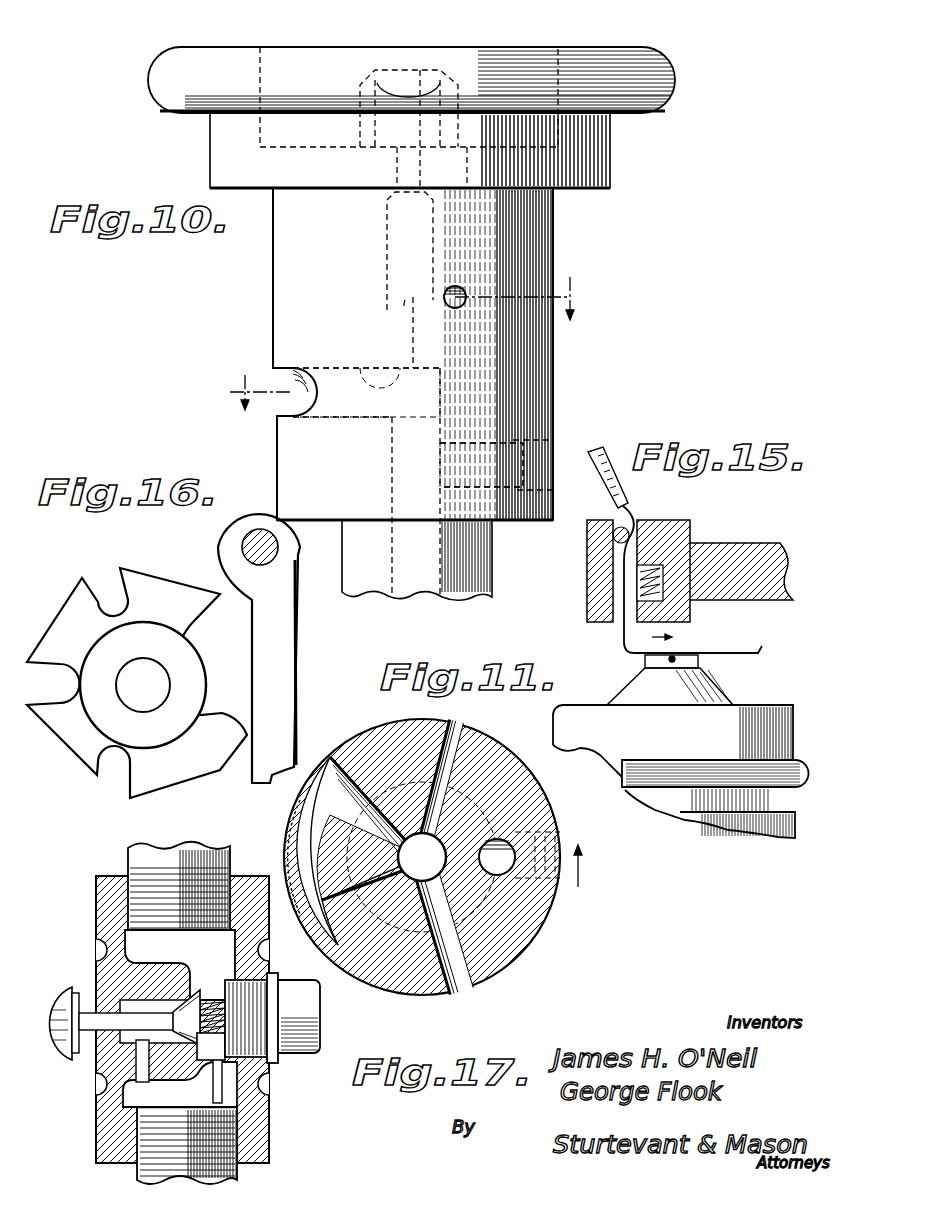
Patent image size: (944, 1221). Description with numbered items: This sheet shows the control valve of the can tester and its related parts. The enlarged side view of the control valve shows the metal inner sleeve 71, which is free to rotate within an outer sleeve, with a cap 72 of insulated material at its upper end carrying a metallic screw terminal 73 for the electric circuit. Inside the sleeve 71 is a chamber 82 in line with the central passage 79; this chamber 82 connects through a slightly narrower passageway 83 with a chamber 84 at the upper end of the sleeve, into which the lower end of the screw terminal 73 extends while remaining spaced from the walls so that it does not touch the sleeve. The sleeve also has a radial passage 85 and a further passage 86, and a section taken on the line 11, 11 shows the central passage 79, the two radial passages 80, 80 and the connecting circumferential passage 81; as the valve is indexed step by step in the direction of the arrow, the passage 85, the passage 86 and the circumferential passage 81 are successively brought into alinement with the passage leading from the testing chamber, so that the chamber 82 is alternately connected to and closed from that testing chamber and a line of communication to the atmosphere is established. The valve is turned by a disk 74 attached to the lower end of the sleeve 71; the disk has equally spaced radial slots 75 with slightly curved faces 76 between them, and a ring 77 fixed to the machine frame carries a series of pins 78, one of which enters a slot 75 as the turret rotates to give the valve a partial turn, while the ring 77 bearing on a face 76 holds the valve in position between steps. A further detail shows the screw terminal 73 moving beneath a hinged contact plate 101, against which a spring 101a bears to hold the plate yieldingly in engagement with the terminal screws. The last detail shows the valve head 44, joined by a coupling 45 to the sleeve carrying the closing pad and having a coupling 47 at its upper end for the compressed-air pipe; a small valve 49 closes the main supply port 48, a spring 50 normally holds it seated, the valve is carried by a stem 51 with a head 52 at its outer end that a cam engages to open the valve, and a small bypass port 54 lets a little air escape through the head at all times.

In FIG. 10, the section line 11 11 is at (405, 343).
In FIG. 17, the valve head 44 is at (258, 1120).
In FIG. 17, the coupling 45 is at (140, 1130).
In FIG. 17, the coupling 47 is at (140, 855).
In FIG. 17, the main supply port 48 is at (140, 1055).
In FIG. 17, the small valve 49 is at (194, 995).
In FIG. 17, the spring 50 is at (256, 965).
In FIG. 17, the stem 51 is at (88, 1010).
In FIG. 17, the head 52 is at (62, 1010).
In FIG. 17, the bypass port 54 is at (225, 1078).
In FIG. 10, the inner sleeve 71 is at (537, 247).
In FIG. 11, the inner sleeve 71 is at (540, 797).
In FIG. 15, the cap 72 is at (718, 690).
In FIG. 15, the screw terminal 73 is at (683, 660).
In FIG. 16, the disk 74 is at (143, 685).
In FIG. 16, the radial slots 75 is at (106, 612).
In FIG. 16, the curved faces 76 is at (153, 588).
In FIG. 16, the ring 77 is at (273, 718).
In FIG. 16, the pins 78 is at (244, 540).
In FIG. 10, the central passage 79 is at (408, 487).
In FIG. 11, the central passage 79 is at (435, 857).
In FIG. 10, the radial passages 80 is at (358, 405).
In FIG. 11, the radial passages 80 is at (345, 812).
In FIG. 10, the circumferential passage 81 is at (280, 380).
In FIG. 11, the circumferential passage 81 is at (292, 847).
In FIG. 10, the chamber 82 is at (387, 222).
In FIG. 11, the chamber 82 is at (520, 772).
In FIG. 10, the passageway 83 is at (405, 165).
In FIG. 10, the chamber 84 is at (410, 75).
In FIG. 10, the radial passage 85 is at (455, 308).
In FIG. 11, the radial passage 85 is at (468, 740).
In FIG. 11, the passage 86 is at (462, 950).
In FIG. 15, the contact plate 101 is at (758, 648).
In FIG. 15, the spring 101a is at (662, 570).